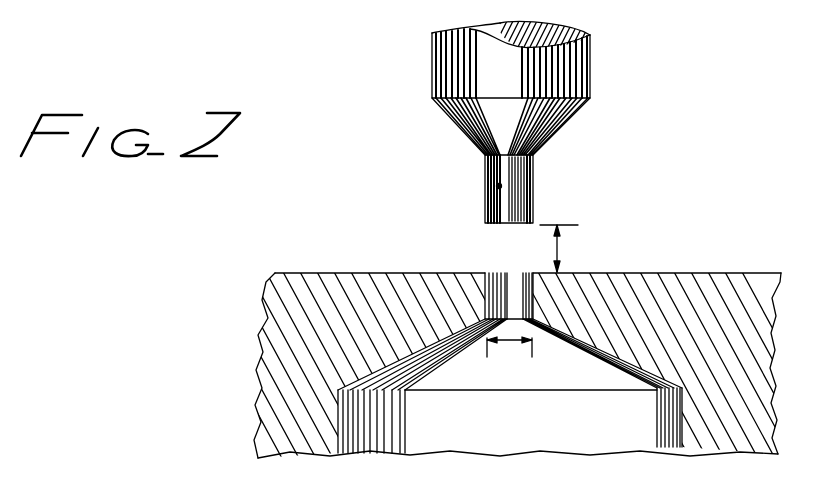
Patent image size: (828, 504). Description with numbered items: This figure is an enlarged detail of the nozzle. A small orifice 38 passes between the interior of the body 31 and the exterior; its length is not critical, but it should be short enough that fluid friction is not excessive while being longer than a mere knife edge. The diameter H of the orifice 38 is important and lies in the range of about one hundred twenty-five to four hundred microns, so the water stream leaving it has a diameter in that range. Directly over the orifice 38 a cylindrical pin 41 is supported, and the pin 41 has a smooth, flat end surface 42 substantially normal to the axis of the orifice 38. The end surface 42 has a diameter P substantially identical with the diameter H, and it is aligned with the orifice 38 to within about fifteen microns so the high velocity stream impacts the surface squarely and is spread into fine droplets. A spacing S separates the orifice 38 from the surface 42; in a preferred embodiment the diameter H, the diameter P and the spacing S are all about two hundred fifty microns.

The body 31 is at (617, 285).
The small orifice 38 is at (502, 272).
The cylindrical pin 41 is at (590, 78).
The flat end surface 42 is at (497, 228).
The pin diameter P is at (533, 198).
The spacing S is at (559, 250).
The orifice diameter H is at (512, 337).